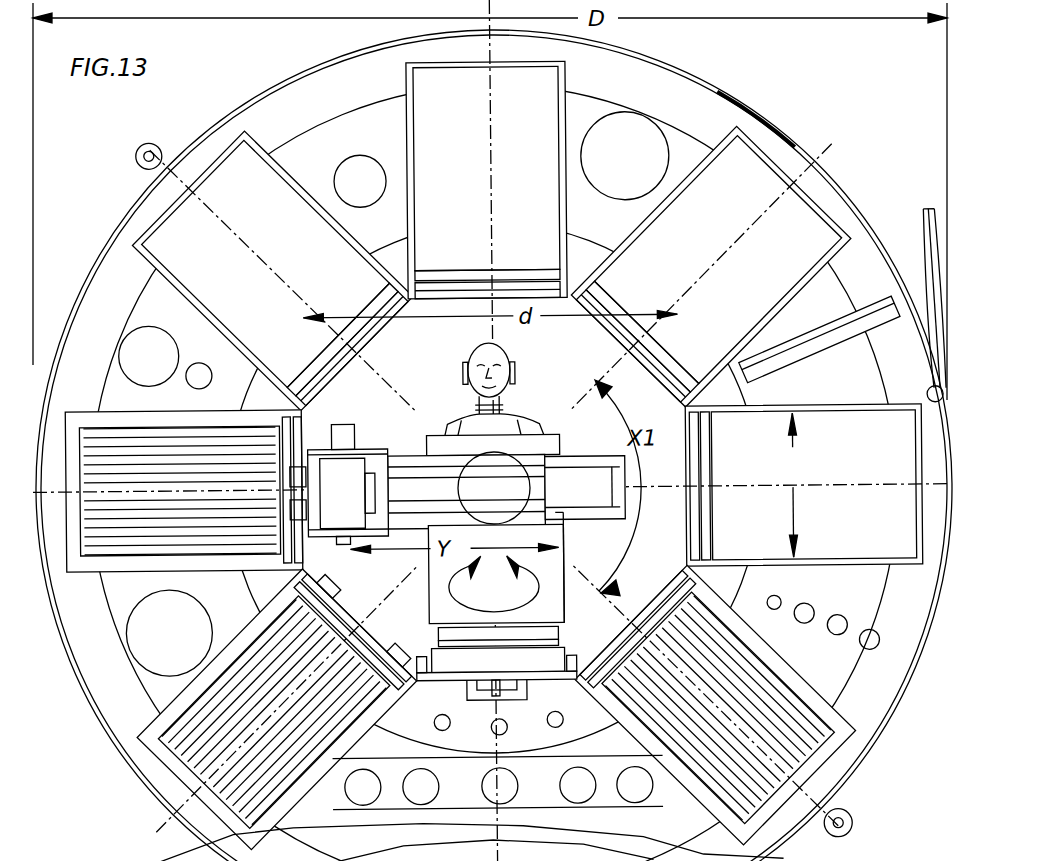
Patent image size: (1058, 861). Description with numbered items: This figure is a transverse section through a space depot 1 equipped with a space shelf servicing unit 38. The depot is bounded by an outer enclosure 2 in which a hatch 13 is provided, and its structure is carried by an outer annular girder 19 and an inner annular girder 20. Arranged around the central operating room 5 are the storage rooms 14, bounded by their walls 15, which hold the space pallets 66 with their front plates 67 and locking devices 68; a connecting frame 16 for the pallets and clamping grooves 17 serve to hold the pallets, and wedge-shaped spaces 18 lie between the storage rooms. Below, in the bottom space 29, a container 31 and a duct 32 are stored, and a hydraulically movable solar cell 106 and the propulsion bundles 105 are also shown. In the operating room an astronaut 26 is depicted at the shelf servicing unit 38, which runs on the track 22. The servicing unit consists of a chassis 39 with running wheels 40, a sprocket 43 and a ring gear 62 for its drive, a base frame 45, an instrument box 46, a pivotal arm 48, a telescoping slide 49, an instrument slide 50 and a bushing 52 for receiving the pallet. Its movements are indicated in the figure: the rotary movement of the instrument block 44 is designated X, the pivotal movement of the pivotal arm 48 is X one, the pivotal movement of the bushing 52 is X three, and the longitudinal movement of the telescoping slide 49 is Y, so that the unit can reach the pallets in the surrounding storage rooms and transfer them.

The space depot 1 is at (703, 118).
The outer enclosure 2 is at (760, 121).
The operating room 5 is at (525, 377).
The hatch 13 is at (928, 250).
The storage rooms 14 is at (629, 234).
The walls 15 is at (415, 123).
The connecting frame 16 is at (466, 269).
The clamping grooves 17 is at (550, 290).
The wedge-shaped spaces 18 is at (804, 469).
The outer annular girder 19 is at (290, 105).
The inner annular girder 20 is at (398, 262).
The track 22 is at (566, 680).
The astronaut 26 is at (500, 425).
The bottom space 29 is at (468, 840).
The container 31 is at (607, 179).
The duct 32 is at (374, 166).
The shelf servicing unit 38 is at (445, 447).
The chassis 39 is at (550, 662).
The running wheels 40 is at (418, 672).
The sprocket 43 is at (490, 700).
The instrument block 44 is at (428, 592).
The base frame 45 is at (545, 634).
The instrument box 46 is at (553, 561).
The pivotal arm 48 is at (602, 460).
The telescoping slide 49 is at (408, 458).
The instrument slide 50 is at (372, 462).
The bushing 52 is at (312, 490).
The ring gear 62 is at (437, 639).
The space pallets 66 is at (187, 450).
The front plates 67 is at (330, 606).
The locking devices 68 is at (290, 478).
The propulsion bundles 105 is at (849, 824).
The hydraulically movable solar cell 106 is at (826, 340).